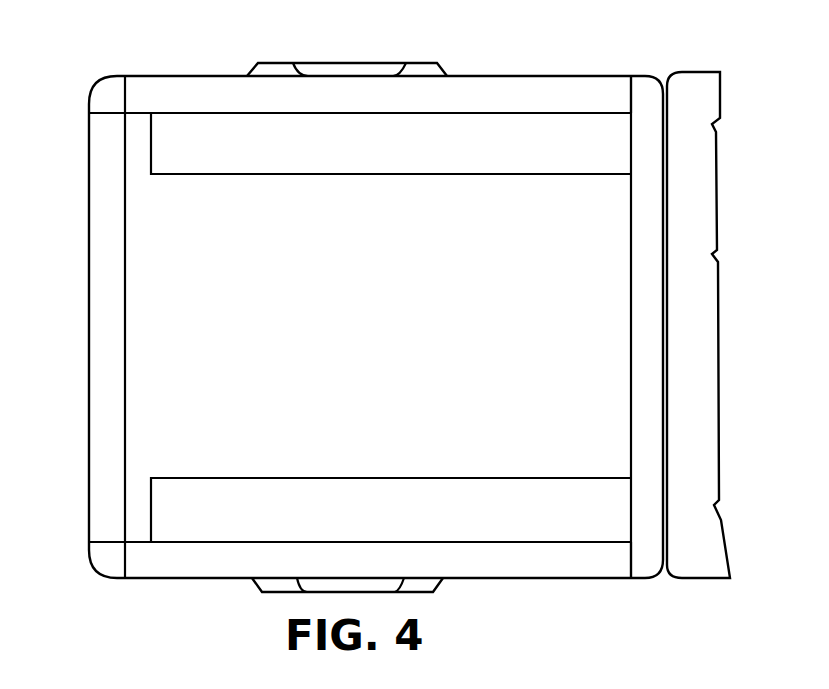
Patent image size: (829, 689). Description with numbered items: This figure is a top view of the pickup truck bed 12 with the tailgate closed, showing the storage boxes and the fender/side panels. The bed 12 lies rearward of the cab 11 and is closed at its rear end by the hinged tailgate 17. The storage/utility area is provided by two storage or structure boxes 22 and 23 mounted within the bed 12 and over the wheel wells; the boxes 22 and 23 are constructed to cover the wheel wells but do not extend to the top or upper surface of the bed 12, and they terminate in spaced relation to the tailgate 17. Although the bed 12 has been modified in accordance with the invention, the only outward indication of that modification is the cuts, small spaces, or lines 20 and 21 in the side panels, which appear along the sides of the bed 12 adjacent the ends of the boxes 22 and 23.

The cab 11 is at (677, 212).
The bed 12 is at (379, 382).
The hinged tailgate 17 is at (126, 291).
The cuts, small spaces, or lines in the side panels 20 is at (630, 90).
The cuts, small spaces, or lines in the side panels 21 is at (126, 93).
The storage or structure box 22 is at (384, 153).
The storage or structure box 23 is at (424, 521).